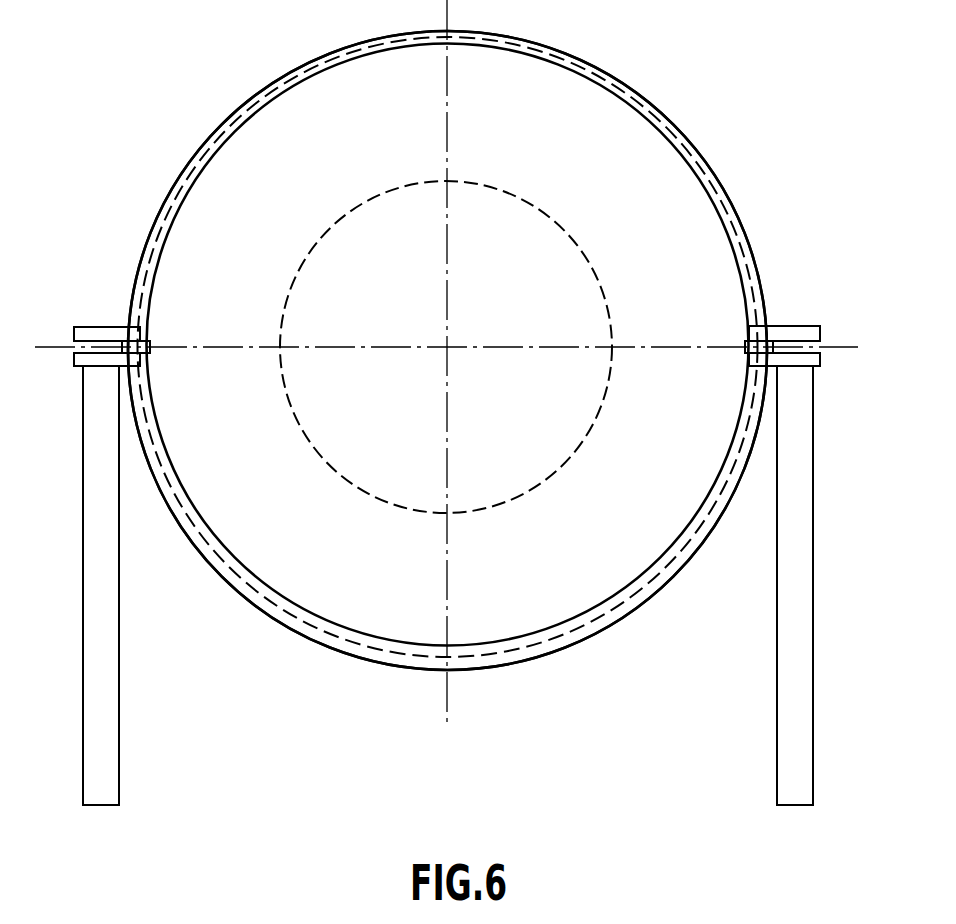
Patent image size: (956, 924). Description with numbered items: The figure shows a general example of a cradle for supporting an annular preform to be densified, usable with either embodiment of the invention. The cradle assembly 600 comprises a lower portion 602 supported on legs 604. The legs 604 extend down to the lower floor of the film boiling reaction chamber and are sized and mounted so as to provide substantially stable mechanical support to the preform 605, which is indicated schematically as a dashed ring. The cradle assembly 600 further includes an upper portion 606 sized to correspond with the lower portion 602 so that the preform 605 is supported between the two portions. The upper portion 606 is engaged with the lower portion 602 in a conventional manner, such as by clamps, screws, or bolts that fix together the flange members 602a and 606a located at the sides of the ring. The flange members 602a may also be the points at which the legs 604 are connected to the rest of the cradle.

The cradle assembly 600 is at (210, 78).
The lower portion 602 is at (331, 644).
The flange members 602a is at (79, 358).
The legs 604 is at (98, 636).
The preform 605 is at (163, 210).
The upper portion 606 is at (600, 72).
The flange members 606a is at (79, 333).